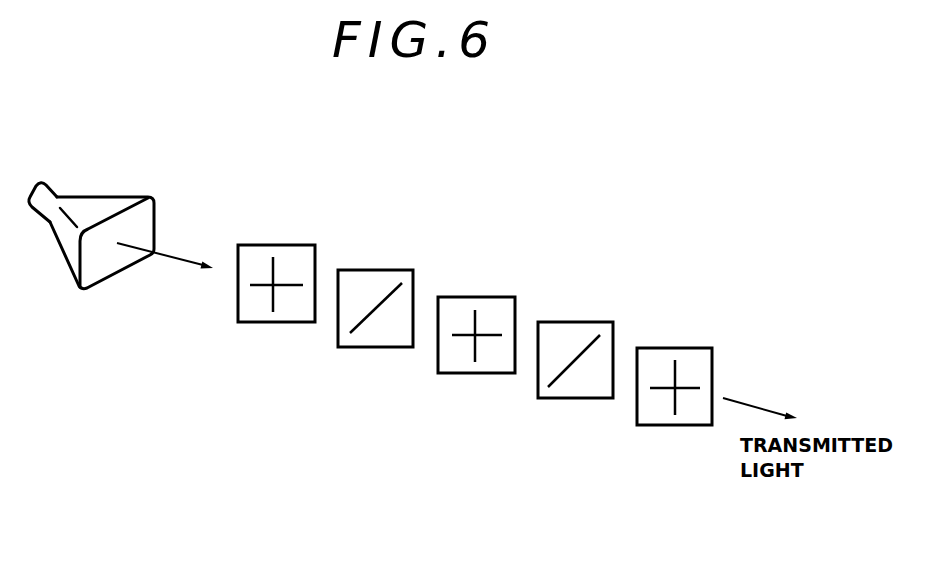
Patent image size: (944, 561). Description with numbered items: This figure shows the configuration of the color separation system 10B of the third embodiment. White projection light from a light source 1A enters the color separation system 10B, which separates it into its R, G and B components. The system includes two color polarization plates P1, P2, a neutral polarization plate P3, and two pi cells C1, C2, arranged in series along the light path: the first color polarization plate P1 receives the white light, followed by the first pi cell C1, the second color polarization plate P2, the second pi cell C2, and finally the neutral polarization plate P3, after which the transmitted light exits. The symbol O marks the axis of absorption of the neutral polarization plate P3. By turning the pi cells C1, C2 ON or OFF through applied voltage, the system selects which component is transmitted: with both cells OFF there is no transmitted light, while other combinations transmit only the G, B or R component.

The light source 1A is at (120, 197).
The color separation system 10B is at (733, 323).
The color polarization plate P1 is at (282, 323).
The pi cell C1 is at (373, 348).
The color polarization plate P2 is at (477, 375).
The pi cell C2 is at (577, 402).
The neutral polarization plate P3 is at (668, 427).